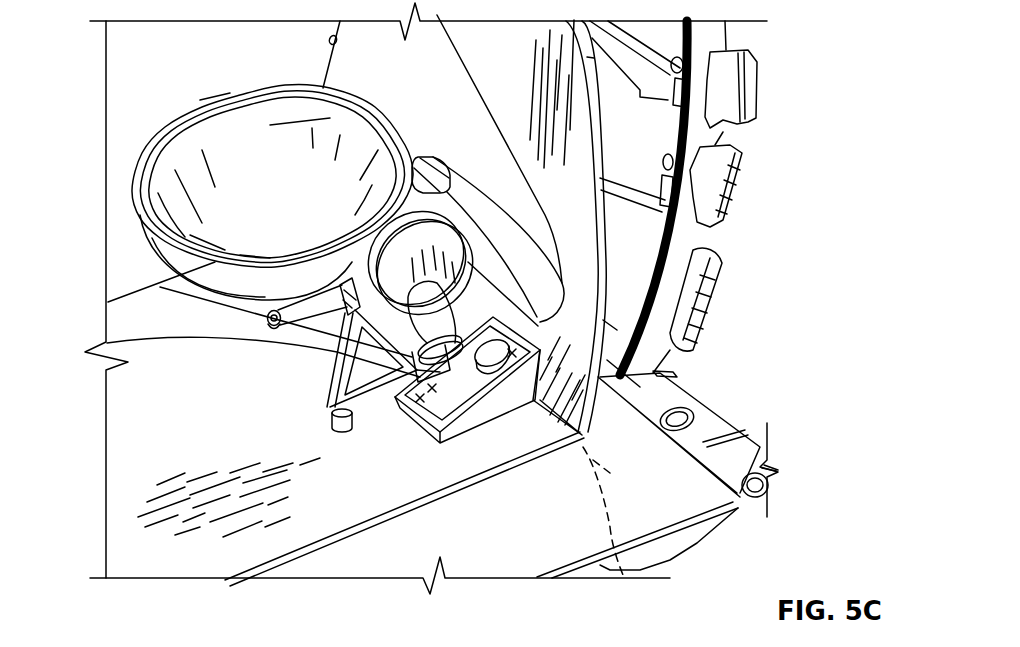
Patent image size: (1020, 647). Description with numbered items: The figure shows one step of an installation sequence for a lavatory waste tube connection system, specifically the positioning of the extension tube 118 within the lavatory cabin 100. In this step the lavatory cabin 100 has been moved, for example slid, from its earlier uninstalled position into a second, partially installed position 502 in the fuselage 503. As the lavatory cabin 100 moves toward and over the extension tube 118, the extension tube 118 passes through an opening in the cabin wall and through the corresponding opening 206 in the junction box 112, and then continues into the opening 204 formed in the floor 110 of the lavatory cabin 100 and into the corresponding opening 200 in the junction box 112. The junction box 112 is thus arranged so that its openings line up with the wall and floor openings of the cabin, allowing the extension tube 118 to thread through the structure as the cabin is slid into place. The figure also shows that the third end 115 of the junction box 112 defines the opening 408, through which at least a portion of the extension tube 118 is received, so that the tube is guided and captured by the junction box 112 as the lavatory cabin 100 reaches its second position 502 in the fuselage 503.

The lavatory cabin 100 is at (186, 440).
The floor 110 is at (203, 518).
The junction box 112 is at (538, 394).
The third end 115 is at (453, 420).
The extension tube 118 is at (513, 337).
The opening 200 is at (430, 430).
The opening 204 is at (106, 350).
The opening 206 is at (645, 282).
The opening 408 is at (160, 288).
The second position 502 is at (614, 534).
The fuselage 503 is at (738, 240).